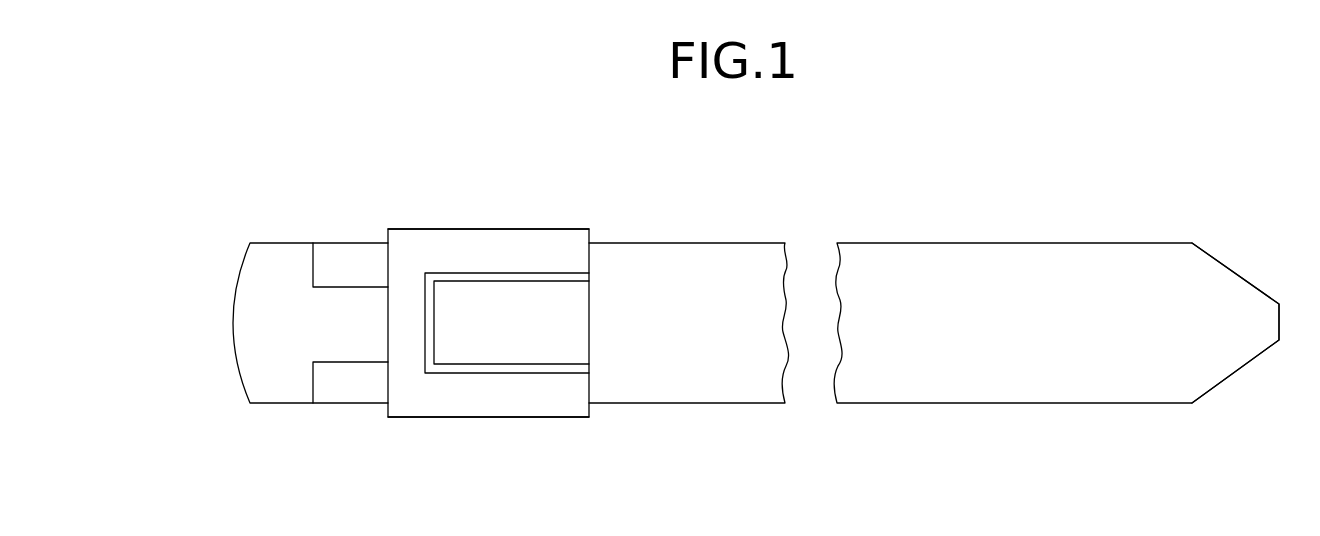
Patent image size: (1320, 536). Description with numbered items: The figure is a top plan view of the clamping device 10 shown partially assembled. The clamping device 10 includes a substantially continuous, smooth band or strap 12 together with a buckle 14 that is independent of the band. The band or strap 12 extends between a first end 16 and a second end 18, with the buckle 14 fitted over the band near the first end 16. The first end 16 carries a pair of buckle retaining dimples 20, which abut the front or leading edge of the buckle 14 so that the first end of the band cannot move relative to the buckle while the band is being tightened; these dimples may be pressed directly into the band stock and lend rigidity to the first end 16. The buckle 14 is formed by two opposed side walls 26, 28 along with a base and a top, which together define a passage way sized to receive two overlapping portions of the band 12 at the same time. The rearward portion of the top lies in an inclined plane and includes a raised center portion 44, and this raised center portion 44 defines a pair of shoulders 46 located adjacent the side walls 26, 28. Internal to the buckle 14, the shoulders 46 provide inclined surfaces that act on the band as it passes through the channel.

The clamping device 10 is at (213, 113).
The band or strap 12 is at (978, 265).
The buckle 14 is at (410, 258).
The first end 16 is at (240, 383).
The second end 18 is at (1247, 362).
The buckle retaining dimples 20 is at (342, 253).
The side wall 26 is at (452, 418).
The side wall 28 is at (484, 228).
The raised center portion 44 is at (546, 339).
The shoulders 46 is at (557, 258).